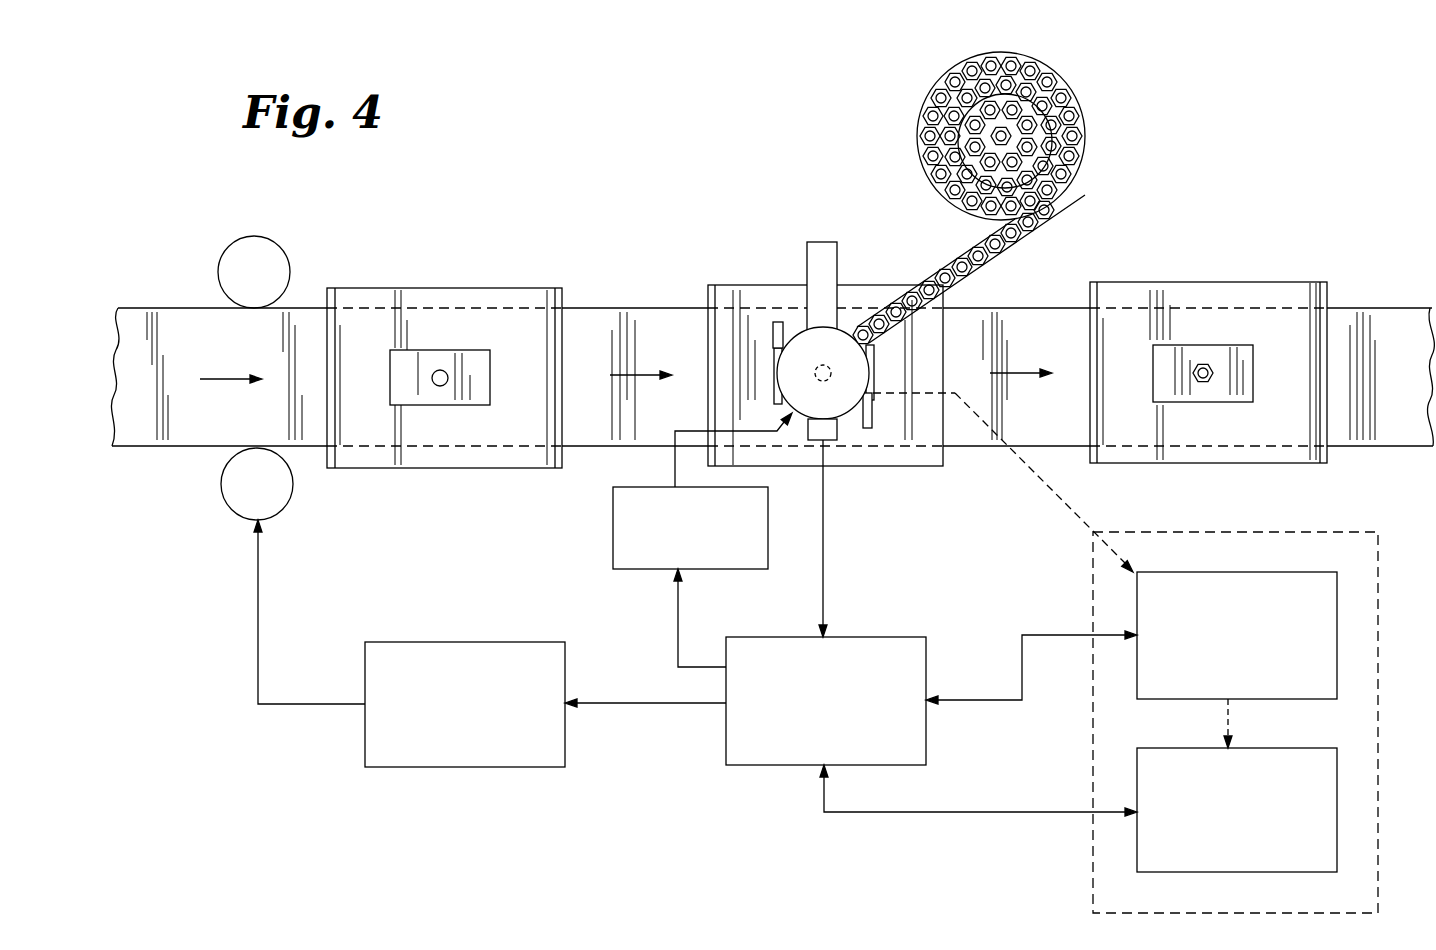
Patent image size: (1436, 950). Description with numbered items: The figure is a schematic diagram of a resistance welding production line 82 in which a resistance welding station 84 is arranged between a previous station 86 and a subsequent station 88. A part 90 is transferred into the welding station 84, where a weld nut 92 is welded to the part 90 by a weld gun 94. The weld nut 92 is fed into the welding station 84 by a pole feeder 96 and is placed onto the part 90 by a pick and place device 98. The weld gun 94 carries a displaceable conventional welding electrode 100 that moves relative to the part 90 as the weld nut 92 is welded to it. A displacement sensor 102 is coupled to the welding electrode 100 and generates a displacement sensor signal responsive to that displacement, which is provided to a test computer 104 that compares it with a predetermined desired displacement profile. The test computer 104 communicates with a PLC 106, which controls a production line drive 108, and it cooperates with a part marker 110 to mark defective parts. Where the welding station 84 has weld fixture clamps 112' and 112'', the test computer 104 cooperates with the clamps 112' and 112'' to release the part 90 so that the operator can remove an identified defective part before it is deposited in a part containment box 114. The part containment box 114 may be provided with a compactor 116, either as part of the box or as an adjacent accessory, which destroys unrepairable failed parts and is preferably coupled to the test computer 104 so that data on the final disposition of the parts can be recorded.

The resistance welding production line 82 is at (562, 204).
The resistance welding station 84 is at (715, 285).
The previous station 86 is at (357, 288).
The subsequent station 88 is at (1230, 282).
The part 90 is at (490, 350).
The weld nut 92 is at (948, 263).
The weld gun 94 is at (848, 412).
The pole feeder 96 is at (1088, 145).
The pick and place device 98 is at (818, 242).
The welding electrode 100 is at (823, 365).
The displacement sensor 102 is at (830, 440).
The test computer 104 is at (845, 637).
The PLC 106 is at (450, 642).
The production line drive 108 is at (222, 483).
The part marker 110 is at (613, 530).
The weld fixture clamp 112' is at (920, 431).
The weld fixture clamp 112'' is at (735, 306).
The part containment box 114 is at (1327, 532).
The compactor 116 is at (1137, 778).